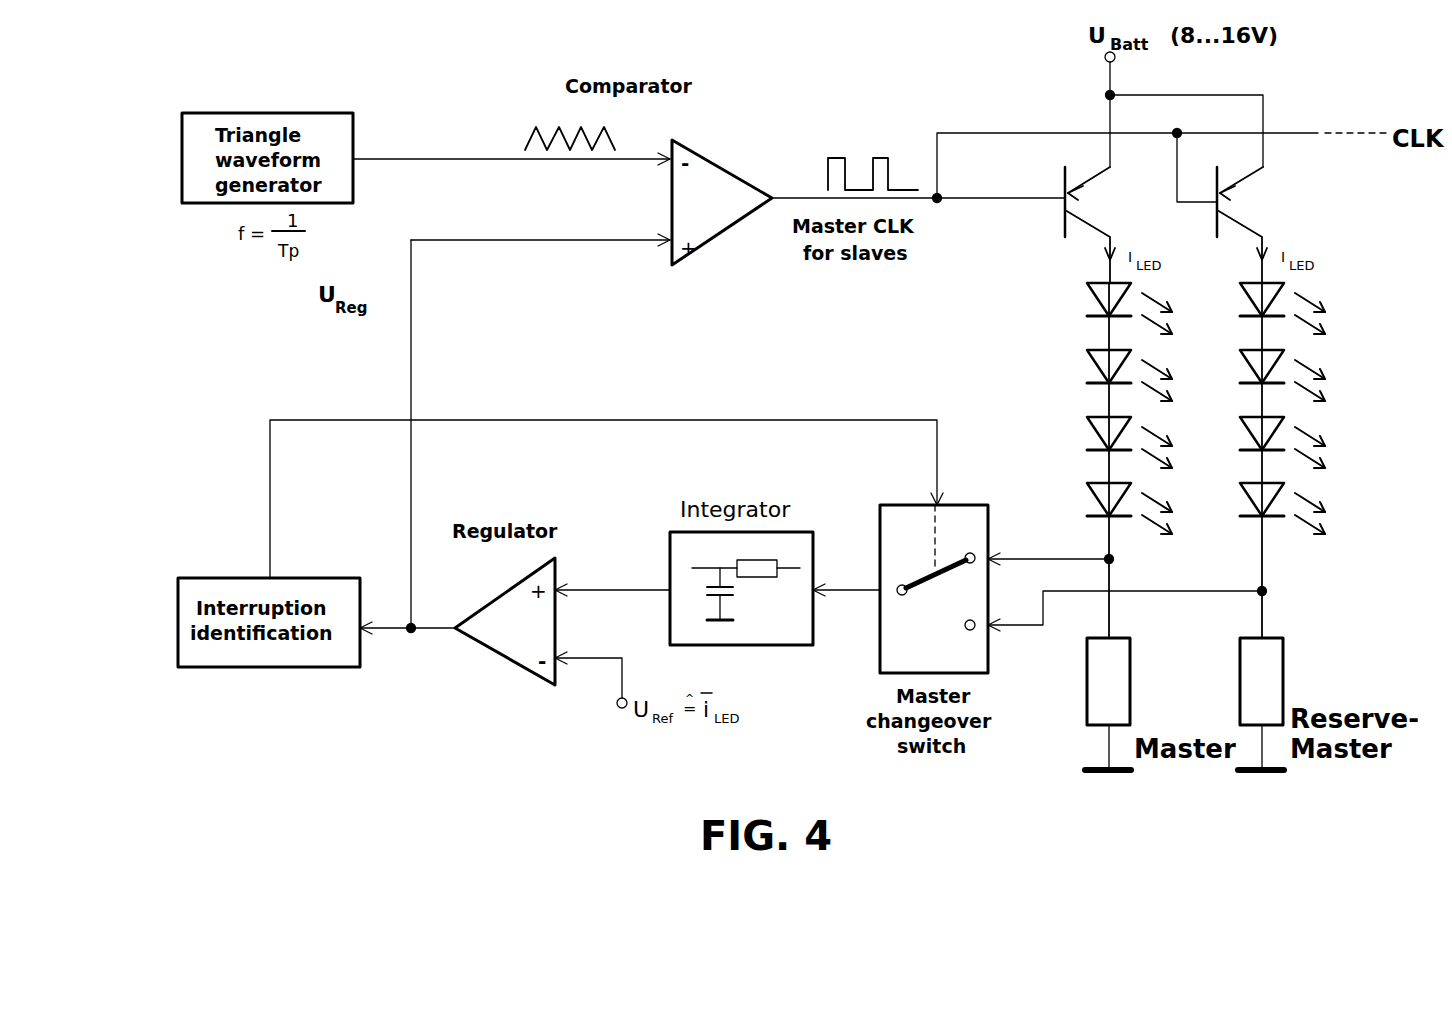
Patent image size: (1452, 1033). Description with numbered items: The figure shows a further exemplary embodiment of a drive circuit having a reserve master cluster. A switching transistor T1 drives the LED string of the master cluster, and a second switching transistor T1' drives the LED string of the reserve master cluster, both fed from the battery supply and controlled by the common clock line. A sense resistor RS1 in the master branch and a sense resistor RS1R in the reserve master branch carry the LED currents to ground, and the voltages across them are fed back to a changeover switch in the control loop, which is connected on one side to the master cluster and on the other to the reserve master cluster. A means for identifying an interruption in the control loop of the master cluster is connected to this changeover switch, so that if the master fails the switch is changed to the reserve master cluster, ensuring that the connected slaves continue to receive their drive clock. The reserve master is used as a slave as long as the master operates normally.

The master switching transistor T1 is at (1108, 225).
The reserve-master switching transistor T1' is at (1263, 225).
The master sense resistor RS1 is at (1135, 704).
The reserve-master sense resistor RS1R is at (1294, 704).